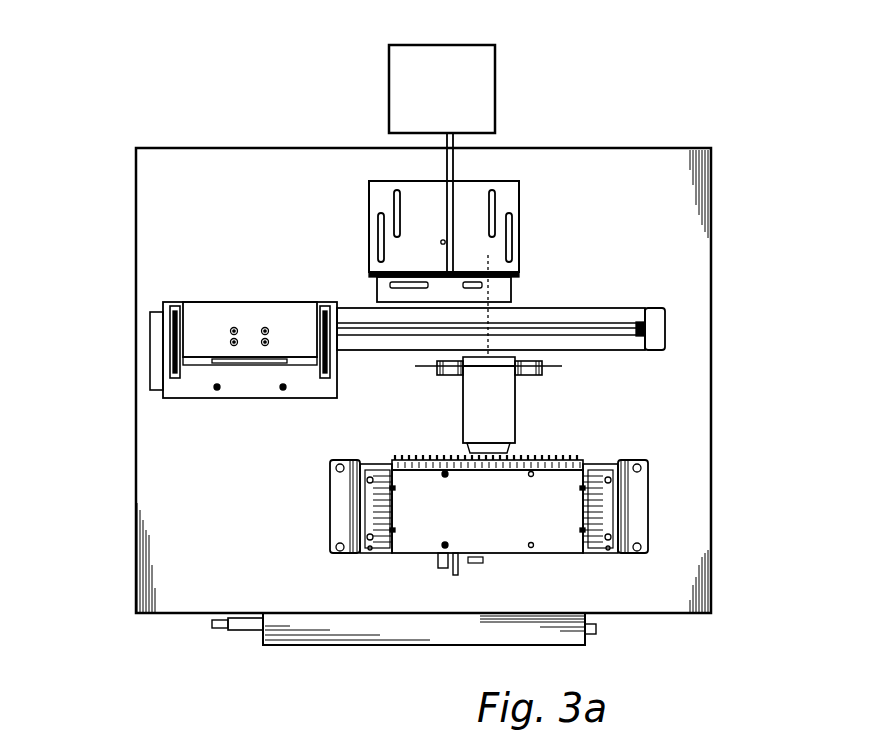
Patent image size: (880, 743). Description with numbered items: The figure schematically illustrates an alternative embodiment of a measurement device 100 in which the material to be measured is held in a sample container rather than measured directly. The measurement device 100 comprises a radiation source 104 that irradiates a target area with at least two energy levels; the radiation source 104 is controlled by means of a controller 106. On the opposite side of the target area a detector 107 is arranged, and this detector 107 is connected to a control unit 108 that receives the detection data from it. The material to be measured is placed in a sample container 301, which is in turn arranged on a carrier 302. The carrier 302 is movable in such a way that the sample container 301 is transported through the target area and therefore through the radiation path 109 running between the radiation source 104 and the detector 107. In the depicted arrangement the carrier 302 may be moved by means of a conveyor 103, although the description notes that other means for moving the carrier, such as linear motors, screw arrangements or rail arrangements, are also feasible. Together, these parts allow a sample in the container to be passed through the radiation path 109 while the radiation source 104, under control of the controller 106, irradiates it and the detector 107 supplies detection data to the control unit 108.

The measurement device 100 is at (742, 93).
The conveyor 103 is at (633, 318).
The radiation source 104 is at (562, 517).
The controller 106 is at (568, 640).
The detector 107 is at (502, 268).
The control unit 108 is at (465, 103).
The radiation path 109 is at (489, 315).
The sample container 301 is at (205, 311).
The carrier 302 is at (205, 374).